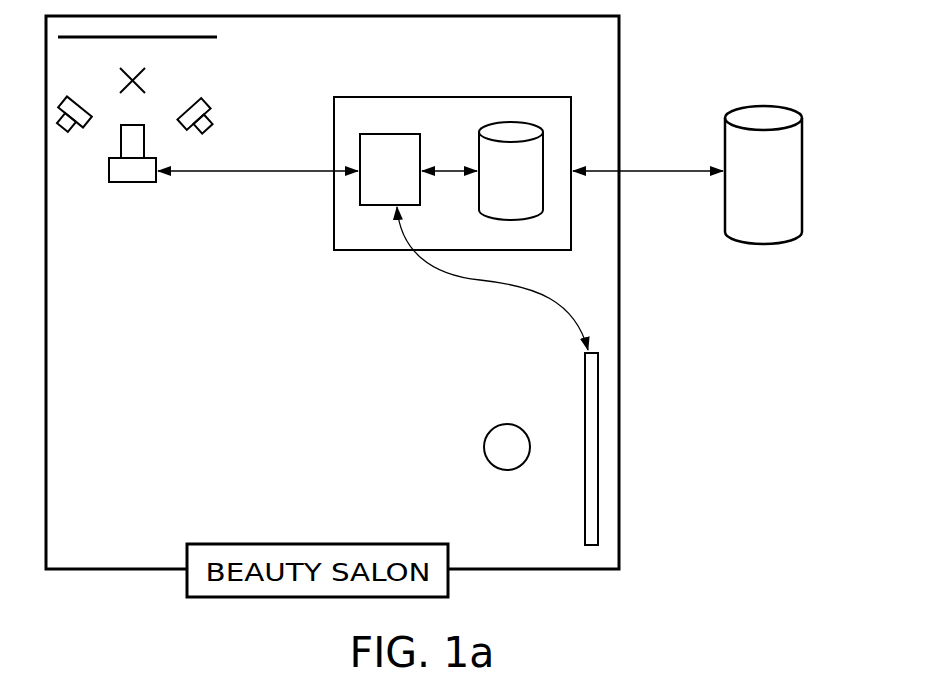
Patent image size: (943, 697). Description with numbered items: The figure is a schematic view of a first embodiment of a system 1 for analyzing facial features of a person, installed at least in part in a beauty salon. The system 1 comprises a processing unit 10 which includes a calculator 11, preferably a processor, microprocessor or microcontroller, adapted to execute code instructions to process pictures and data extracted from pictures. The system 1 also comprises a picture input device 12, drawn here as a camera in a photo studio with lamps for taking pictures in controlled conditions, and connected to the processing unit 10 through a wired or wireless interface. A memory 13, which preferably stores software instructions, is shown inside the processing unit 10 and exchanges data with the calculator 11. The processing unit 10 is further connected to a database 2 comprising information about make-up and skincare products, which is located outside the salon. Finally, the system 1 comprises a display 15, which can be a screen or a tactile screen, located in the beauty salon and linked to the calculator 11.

The system 1 is at (636, 355).
The database 2 is at (760, 245).
The processing unit 10 is at (373, 254).
The calculator 11 is at (375, 184).
The picture input device 12 is at (132, 185).
The memory 13 is at (492, 122).
The display 15 is at (600, 479).